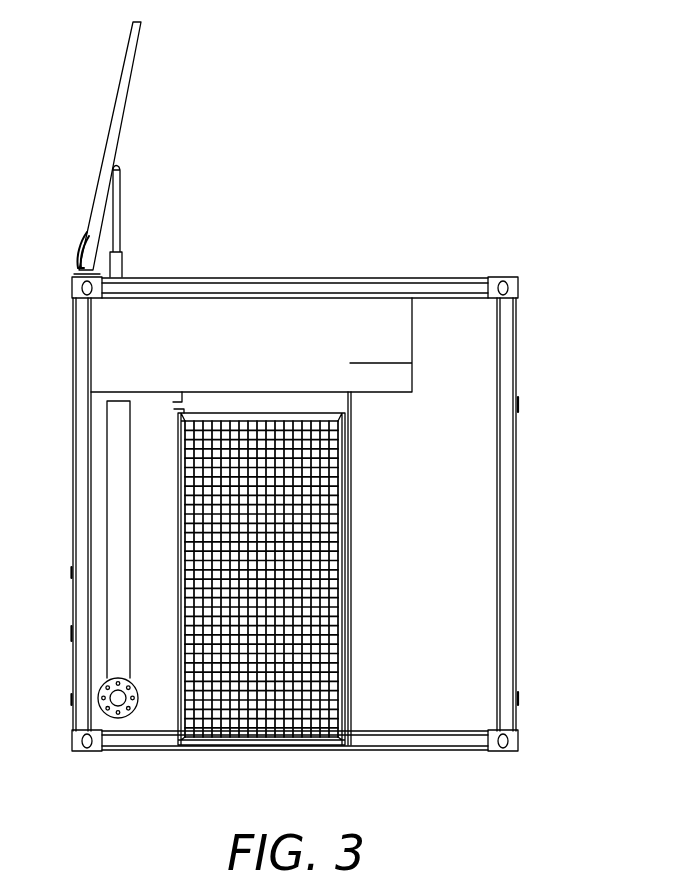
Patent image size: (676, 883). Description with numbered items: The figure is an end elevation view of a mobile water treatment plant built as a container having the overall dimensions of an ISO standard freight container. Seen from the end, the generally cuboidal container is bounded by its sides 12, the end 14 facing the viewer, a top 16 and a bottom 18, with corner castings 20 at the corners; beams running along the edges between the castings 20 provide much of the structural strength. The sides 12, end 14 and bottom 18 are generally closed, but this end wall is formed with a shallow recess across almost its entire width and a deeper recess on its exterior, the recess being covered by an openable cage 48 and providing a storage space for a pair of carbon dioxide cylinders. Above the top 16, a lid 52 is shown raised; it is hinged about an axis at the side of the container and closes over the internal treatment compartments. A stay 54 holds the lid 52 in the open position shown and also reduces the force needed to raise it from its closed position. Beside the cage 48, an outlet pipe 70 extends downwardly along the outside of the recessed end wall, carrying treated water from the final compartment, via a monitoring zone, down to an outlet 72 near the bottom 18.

The sides 12 is at (73, 437).
The ends 14 is at (465, 548).
The top 16 is at (437, 278).
The bottom 18 is at (430, 751).
The corner castings 20 is at (72, 286).
The openable cage 48 is at (268, 680).
The lid 52 is at (121, 75).
The stay 54 is at (122, 212).
The outlet pipe 70 is at (117, 548).
The outlet 72 is at (118, 698).